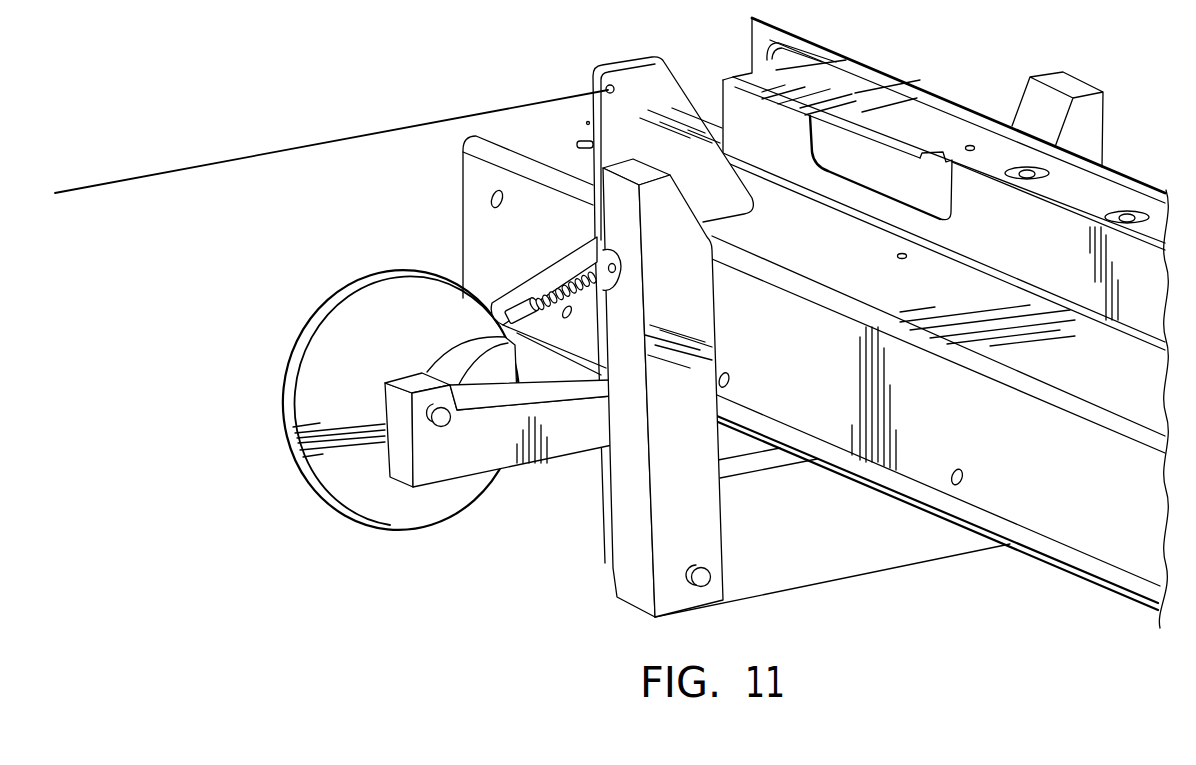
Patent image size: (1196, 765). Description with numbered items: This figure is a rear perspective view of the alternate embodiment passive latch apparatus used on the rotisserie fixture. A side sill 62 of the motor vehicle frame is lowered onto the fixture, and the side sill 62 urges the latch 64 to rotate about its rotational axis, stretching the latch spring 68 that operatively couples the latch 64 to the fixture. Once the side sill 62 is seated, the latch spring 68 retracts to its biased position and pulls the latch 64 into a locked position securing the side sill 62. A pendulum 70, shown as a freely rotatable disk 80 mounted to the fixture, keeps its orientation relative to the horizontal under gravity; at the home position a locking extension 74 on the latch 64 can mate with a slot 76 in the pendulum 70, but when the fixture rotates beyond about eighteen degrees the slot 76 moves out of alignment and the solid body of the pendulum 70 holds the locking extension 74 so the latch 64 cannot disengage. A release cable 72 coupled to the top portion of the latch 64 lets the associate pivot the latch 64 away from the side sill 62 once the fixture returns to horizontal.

The side sill 62 is at (1056, 488).
The latch 64 is at (637, 83).
The latch spring 68 is at (604, 254).
The pendulum 70 is at (300, 472).
The release cable 72 is at (197, 165).
The locking extension 74 is at (570, 267).
The slot 76 is at (466, 350).
The freely rotatable disk 80 is at (346, 403).